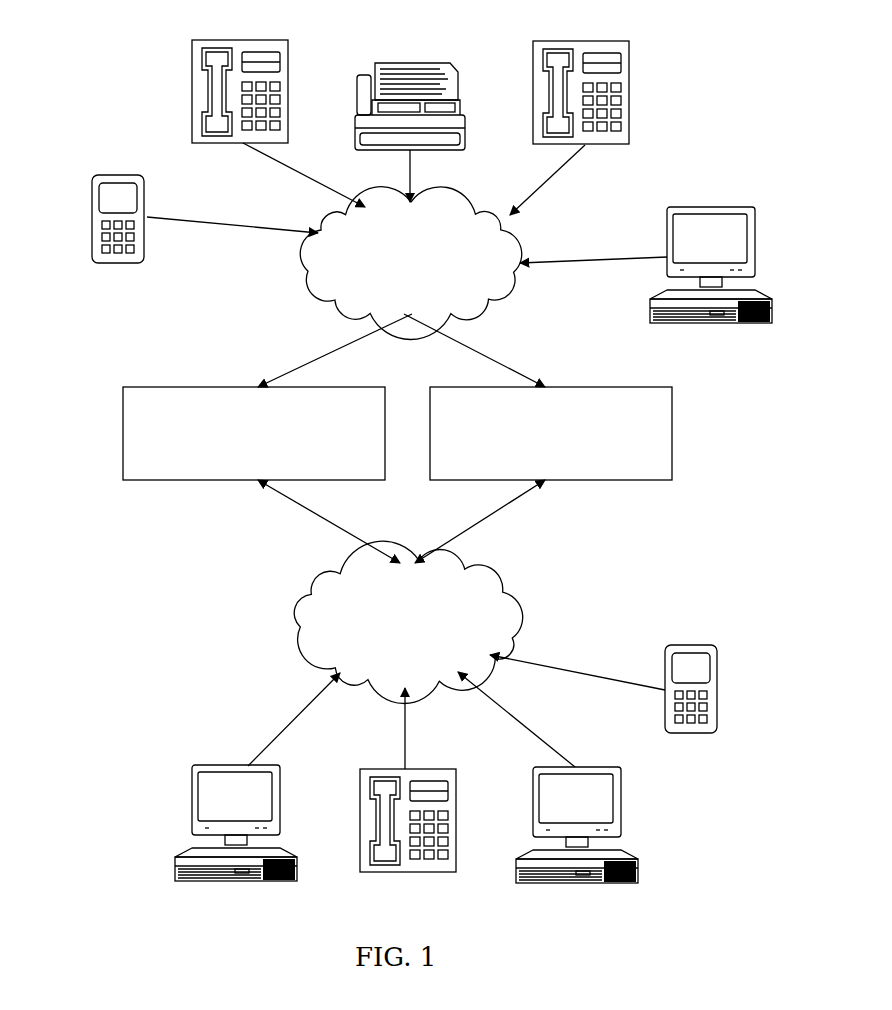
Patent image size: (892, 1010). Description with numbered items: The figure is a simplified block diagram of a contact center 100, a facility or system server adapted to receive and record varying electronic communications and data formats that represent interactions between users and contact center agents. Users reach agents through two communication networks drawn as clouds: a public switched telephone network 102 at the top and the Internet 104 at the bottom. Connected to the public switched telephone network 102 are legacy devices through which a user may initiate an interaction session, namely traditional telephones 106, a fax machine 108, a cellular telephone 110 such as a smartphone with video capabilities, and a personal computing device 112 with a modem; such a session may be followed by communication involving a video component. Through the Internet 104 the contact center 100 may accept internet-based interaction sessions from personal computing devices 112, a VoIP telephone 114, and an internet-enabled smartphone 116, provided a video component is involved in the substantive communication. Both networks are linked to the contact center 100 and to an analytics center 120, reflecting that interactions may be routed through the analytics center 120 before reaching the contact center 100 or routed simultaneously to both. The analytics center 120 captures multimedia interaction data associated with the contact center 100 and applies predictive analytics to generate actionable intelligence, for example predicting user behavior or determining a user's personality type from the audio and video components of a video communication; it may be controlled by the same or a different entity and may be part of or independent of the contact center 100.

The contact center 100 is at (123, 412).
The public switched telephone network 102 is at (305, 254).
The Internet 104 is at (525, 590).
The traditional telephone 106 is at (192, 78).
The fax machine 108 is at (410, 62).
The cellular telephone 110 is at (92, 203).
The personal computing device 112 is at (713, 207).
The VoIP telephone 114 is at (360, 793).
The internet-enabled smartphone 116 is at (673, 645).
The analytics center 120 is at (672, 437).